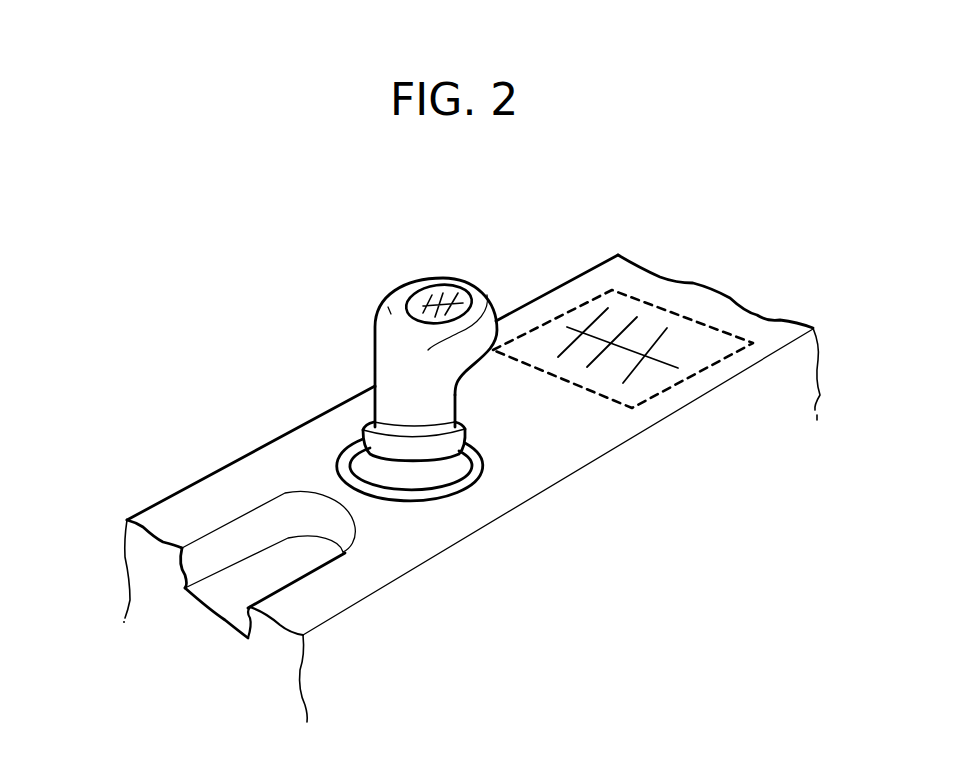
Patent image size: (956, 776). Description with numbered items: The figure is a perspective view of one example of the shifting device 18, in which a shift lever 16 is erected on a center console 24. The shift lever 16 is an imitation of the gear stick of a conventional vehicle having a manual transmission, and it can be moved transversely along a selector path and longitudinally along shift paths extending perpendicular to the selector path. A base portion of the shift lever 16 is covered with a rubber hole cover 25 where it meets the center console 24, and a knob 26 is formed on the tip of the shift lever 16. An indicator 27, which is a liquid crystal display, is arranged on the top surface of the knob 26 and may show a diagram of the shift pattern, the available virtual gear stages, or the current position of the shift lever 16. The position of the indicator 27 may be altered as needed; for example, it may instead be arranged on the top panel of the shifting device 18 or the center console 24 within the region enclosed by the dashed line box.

The shift lever 16 is at (387, 378).
The shifting device 18 is at (361, 309).
The center console 24 is at (310, 428).
The rubber hole cover 25 is at (440, 453).
The knob 26 is at (488, 293).
The indicator 27 is at (440, 292).